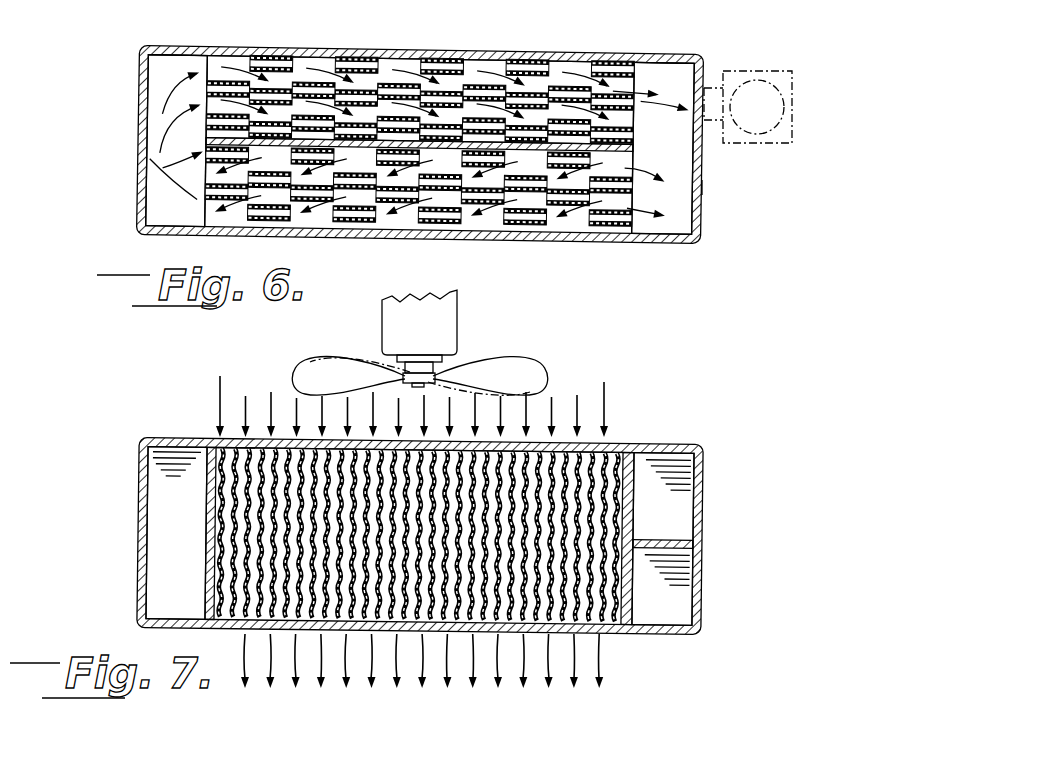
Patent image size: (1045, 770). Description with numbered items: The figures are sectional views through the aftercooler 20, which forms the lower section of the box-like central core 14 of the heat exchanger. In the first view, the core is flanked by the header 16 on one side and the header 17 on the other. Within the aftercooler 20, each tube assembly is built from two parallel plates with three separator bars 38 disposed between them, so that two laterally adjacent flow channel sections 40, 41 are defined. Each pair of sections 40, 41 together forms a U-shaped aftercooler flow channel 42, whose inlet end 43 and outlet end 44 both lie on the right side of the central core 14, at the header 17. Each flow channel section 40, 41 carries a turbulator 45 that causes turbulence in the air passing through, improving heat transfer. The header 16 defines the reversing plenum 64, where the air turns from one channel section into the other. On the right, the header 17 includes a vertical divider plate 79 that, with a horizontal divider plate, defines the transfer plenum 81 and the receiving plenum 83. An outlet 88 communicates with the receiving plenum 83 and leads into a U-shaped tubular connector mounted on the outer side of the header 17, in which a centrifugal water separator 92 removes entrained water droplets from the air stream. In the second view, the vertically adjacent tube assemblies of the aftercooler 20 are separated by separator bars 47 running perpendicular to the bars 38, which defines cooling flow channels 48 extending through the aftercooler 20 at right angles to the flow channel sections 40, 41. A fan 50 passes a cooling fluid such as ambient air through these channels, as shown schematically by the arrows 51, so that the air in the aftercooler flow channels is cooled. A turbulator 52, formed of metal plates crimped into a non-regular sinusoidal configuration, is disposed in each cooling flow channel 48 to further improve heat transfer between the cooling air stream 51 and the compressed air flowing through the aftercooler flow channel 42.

In FIG. 6, the central core 14 is at (278, 45).
In FIG. 6, the header 16 is at (134, 103).
In FIG. 7, the header 16 is at (134, 502).
In FIG. 6, the header 17 is at (706, 231).
In FIG. 7, the header 17 is at (709, 500).
In FIG. 6, the aftercooler 20 is at (620, 256).
In FIG. 7, the aftercooler 20 is at (204, 432).
In FIG. 6, the separator bars 38 is at (210, 150).
In FIG. 6, the flow channel section 40 is at (478, 240).
In FIG. 6, the flow channel section 41 is at (494, 50).
In FIG. 6, the aftercooler flow channel 42 is at (205, 180).
In FIG. 6, the inlet end 43 is at (642, 243).
In FIG. 6, the outlet end 44 is at (640, 85).
In FIG. 6, the turbulator 45 is at (394, 50).
In FIG. 7, the separator bars 47 is at (205, 562).
In FIG. 7, the cooling flow channels 48 is at (620, 436).
In FIG. 7, the fan 50 is at (503, 373).
In FIG. 7, the arrows 51 is at (250, 668).
In FIG. 7, the turbulator 52 is at (605, 638).
In FIG. 6, the reversing plenum 64 is at (165, 72).
In FIG. 6, the vertical divider plate 79 is at (702, 187).
In FIG. 6, the transfer plenum 81 is at (677, 205).
In FIG. 6, the receiving plenum 83 is at (676, 80).
In FIG. 6, the outlet 88 is at (708, 112).
In FIG. 6, the centrifugal water separator 92 is at (745, 72).